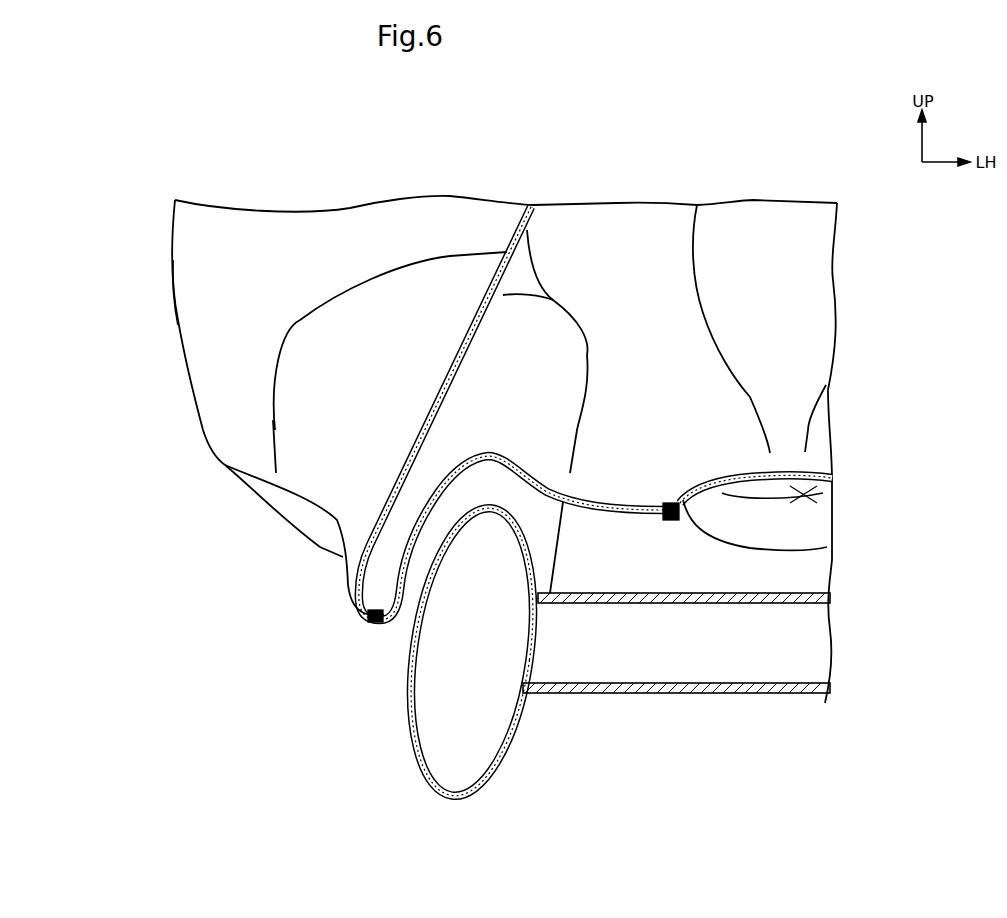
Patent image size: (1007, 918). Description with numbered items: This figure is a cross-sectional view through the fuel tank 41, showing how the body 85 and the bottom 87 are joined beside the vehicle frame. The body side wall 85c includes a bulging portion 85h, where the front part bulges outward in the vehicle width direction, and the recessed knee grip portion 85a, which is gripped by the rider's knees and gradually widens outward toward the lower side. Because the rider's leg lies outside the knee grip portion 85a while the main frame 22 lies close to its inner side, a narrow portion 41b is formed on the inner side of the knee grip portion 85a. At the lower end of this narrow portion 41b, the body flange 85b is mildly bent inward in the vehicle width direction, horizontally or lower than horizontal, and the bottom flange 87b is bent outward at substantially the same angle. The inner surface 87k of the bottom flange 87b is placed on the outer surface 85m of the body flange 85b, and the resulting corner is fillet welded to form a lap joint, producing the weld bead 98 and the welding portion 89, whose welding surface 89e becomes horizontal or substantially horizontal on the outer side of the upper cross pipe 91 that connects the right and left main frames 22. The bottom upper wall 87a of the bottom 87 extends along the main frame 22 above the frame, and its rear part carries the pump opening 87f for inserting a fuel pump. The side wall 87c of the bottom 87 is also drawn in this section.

The main frame 22 is at (495, 758).
The fuel tank 41 is at (173, 246).
The narrow portion 41b is at (372, 512).
The body 85 is at (345, 243).
The knee grip portion 85a is at (407, 448).
The body flange 85b is at (360, 597).
The body side wall 85c is at (490, 273).
The bulging portion 85h is at (190, 287).
The outer surface of body flange 85m is at (373, 636).
The bottom 87 is at (805, 362).
The bottom upper wall 87a is at (637, 520).
The bottom flange 87b is at (388, 629).
The side wall of reinforcement panel 87c is at (428, 530).
The pump opening 87f is at (793, 502).
The inner surface of bottom flange 87k is at (410, 635).
The welding portion 89 is at (353, 623).
The welding surface 89e is at (377, 628).
The upper cross pipe 91 is at (670, 694).
The weld bead 98 is at (367, 631).